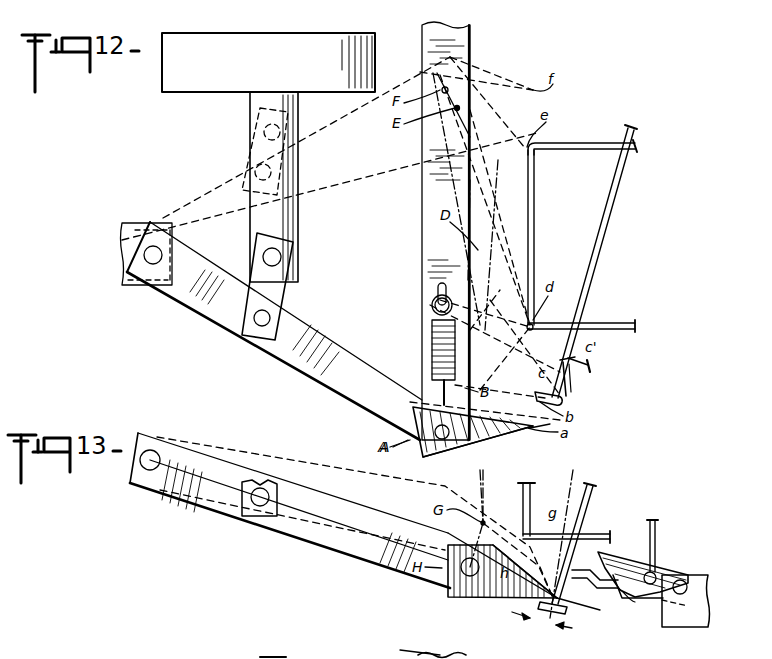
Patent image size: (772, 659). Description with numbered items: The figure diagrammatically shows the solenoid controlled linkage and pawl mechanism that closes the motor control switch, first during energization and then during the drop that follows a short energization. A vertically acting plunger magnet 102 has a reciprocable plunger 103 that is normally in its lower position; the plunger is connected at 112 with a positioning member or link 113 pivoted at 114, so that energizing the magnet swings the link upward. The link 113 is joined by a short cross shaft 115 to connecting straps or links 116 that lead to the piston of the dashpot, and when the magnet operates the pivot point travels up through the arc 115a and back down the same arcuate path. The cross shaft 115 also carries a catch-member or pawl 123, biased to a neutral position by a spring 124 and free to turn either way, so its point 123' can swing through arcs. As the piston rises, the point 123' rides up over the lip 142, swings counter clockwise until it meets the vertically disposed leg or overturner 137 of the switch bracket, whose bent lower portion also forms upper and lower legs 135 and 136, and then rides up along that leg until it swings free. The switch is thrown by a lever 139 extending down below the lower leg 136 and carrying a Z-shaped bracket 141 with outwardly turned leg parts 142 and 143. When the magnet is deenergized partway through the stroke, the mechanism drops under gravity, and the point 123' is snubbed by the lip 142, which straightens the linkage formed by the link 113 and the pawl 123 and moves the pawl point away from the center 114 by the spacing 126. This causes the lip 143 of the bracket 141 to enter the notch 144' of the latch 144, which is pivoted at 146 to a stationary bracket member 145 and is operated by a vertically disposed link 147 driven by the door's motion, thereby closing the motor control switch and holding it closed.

In FIG. 12, the plunger magnet 102 is at (268, 62).
In FIG. 12, the plunger 103 is at (298, 190).
In FIG. 12, the connection 112 is at (262, 328).
In FIG. 13, the connection 112 is at (258, 505).
In FIG. 12, the positioning member or link 113 is at (218, 318).
In FIG. 13, the positioning member or link 113 is at (358, 558).
In FIG. 12, the pivot 114 is at (153, 265).
In FIG. 13, the pivot 114 is at (150, 470).
In FIG. 12, the cross shaft 115 is at (438, 448).
In FIG. 13, the cross shaft 115 is at (450, 588).
In FIG. 12, the arc 115a is at (480, 210).
In FIG. 13, the arc 115a is at (520, 500).
In FIG. 12, the connecting straps or links 116 is at (432, 152).
In FIG. 13, the connecting straps or links 116 is at (407, 643).
In FIG. 12, the catch-member or pawl 123 is at (478, 447).
In FIG. 13, the catch-member or pawl 123 is at (503, 586).
In FIG. 12, the point of the pawl 123' is at (553, 439).
In FIG. 13, the point of the pawl 123' is at (589, 618).
In FIG. 12, the spring 124 is at (432, 335).
In FIG. 13, the spacing 126 is at (533, 632).
In FIG. 12, the upper leg 135 is at (585, 143).
In FIG. 12, the lower leg 136 is at (595, 325).
In FIG. 12, the vertically disposed leg or overturner 137 is at (534, 232).
In FIG. 13, the vertically disposed leg or overturner 137 is at (534, 498).
In FIG. 12, the lever 139 is at (600, 245).
In FIG. 13, the lever 139 is at (585, 490).
In FIG. 12, the Z-shaped bracket 141 is at (590, 369).
In FIG. 13, the Z-shaped bracket 141 is at (595, 570).
In FIG. 12, the lip 142 is at (562, 400).
In FIG. 13, the lip 142 is at (556, 614).
In FIG. 12, the lip 143 is at (572, 358).
In FIG. 13, the lip 143 is at (618, 596).
In FIG. 13, the latch 144 is at (643, 546).
In FIG. 13, the notch 144' is at (673, 558).
In FIG. 13, the stationary bracket member 145 is at (665, 625).
In FIG. 13, the pivot 146 is at (688, 587).
In FIG. 13, the vertically disposed link 147 is at (660, 535).